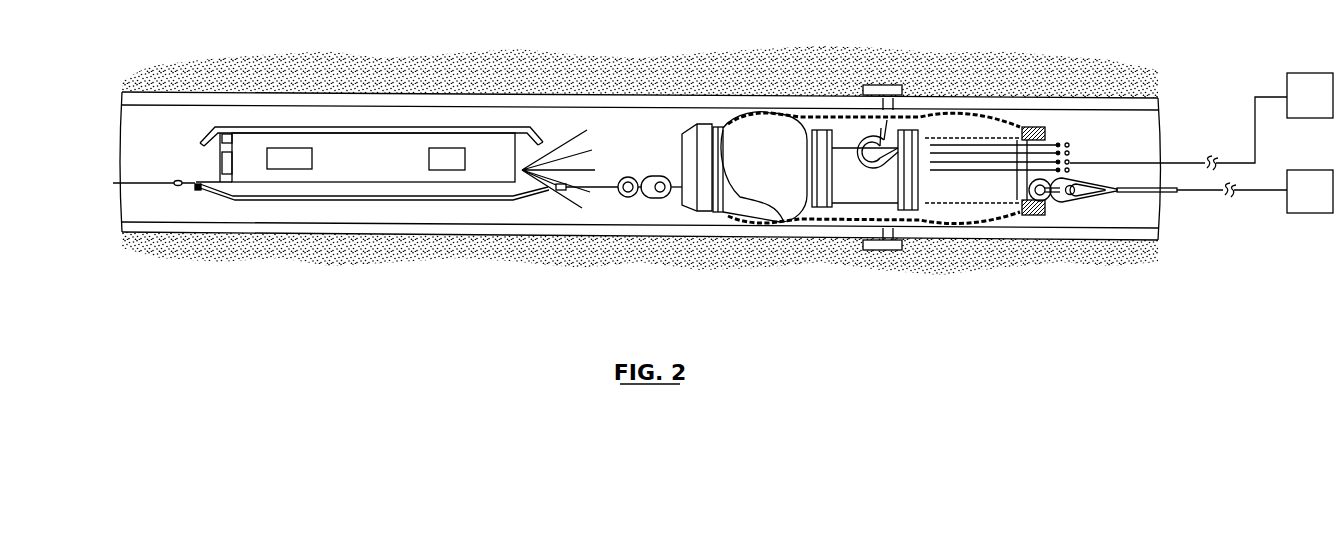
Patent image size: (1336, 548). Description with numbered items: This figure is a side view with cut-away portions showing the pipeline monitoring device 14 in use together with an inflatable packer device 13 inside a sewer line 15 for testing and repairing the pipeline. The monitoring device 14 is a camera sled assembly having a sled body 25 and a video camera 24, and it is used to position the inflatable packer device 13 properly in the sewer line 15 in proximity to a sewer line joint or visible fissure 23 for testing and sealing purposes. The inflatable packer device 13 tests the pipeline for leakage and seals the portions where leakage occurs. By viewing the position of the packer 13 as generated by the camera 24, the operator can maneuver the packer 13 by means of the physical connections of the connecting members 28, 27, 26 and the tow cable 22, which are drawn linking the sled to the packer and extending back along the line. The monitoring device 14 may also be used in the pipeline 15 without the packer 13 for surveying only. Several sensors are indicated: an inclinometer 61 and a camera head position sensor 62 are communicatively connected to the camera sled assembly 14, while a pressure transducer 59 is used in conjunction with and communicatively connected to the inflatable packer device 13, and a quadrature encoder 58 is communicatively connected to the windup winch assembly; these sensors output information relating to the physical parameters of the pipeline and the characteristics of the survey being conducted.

The inflatable packer device 13 is at (875, 160).
The monitoring device 14 is at (369, 100).
The sewer line 15 is at (627, 122).
The tow cable 22 is at (157, 184).
The sewer line joint 23 is at (887, 118).
The video camera 24 is at (523, 172).
The sled body 25 is at (403, 199).
The connecting member 26 is at (603, 188).
The connecting member 27 is at (652, 194).
The connecting member 28 is at (1075, 203).
The quadrature encoder 58 is at (1320, 214).
The pressure transducer 59 is at (1313, 75).
The inclinometer 61 is at (447, 148).
The camera head position sensor 62 is at (287, 148).